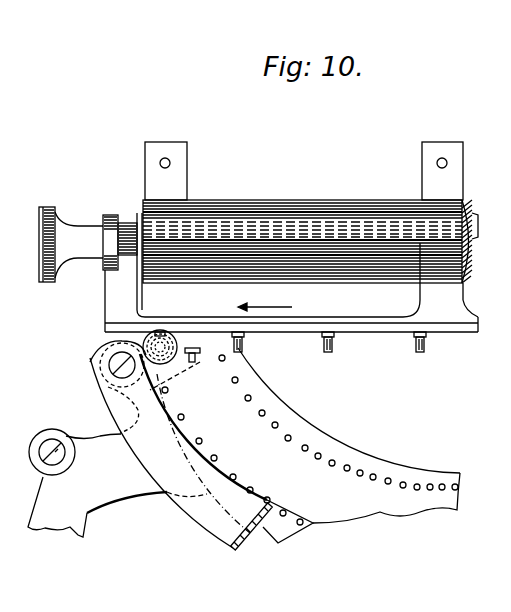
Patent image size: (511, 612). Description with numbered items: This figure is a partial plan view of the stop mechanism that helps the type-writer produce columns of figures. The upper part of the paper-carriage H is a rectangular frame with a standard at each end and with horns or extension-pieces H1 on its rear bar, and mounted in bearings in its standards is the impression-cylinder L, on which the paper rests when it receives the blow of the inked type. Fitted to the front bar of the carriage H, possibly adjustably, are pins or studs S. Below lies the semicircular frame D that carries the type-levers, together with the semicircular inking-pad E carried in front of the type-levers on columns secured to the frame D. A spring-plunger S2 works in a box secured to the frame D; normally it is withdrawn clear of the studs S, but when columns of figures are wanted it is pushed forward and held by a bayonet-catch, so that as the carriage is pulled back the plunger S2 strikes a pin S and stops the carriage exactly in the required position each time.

The horns or extension-pieces H1 is at (187, 144).
The impression-cylinder L is at (290, 200).
The paper-carriage H is at (322, 317).
The pins or studs S is at (244, 346).
The spring-plunger S2 is at (192, 360).
The semicircular frame D is at (244, 444).
The semicircular inking-pad E is at (243, 556).